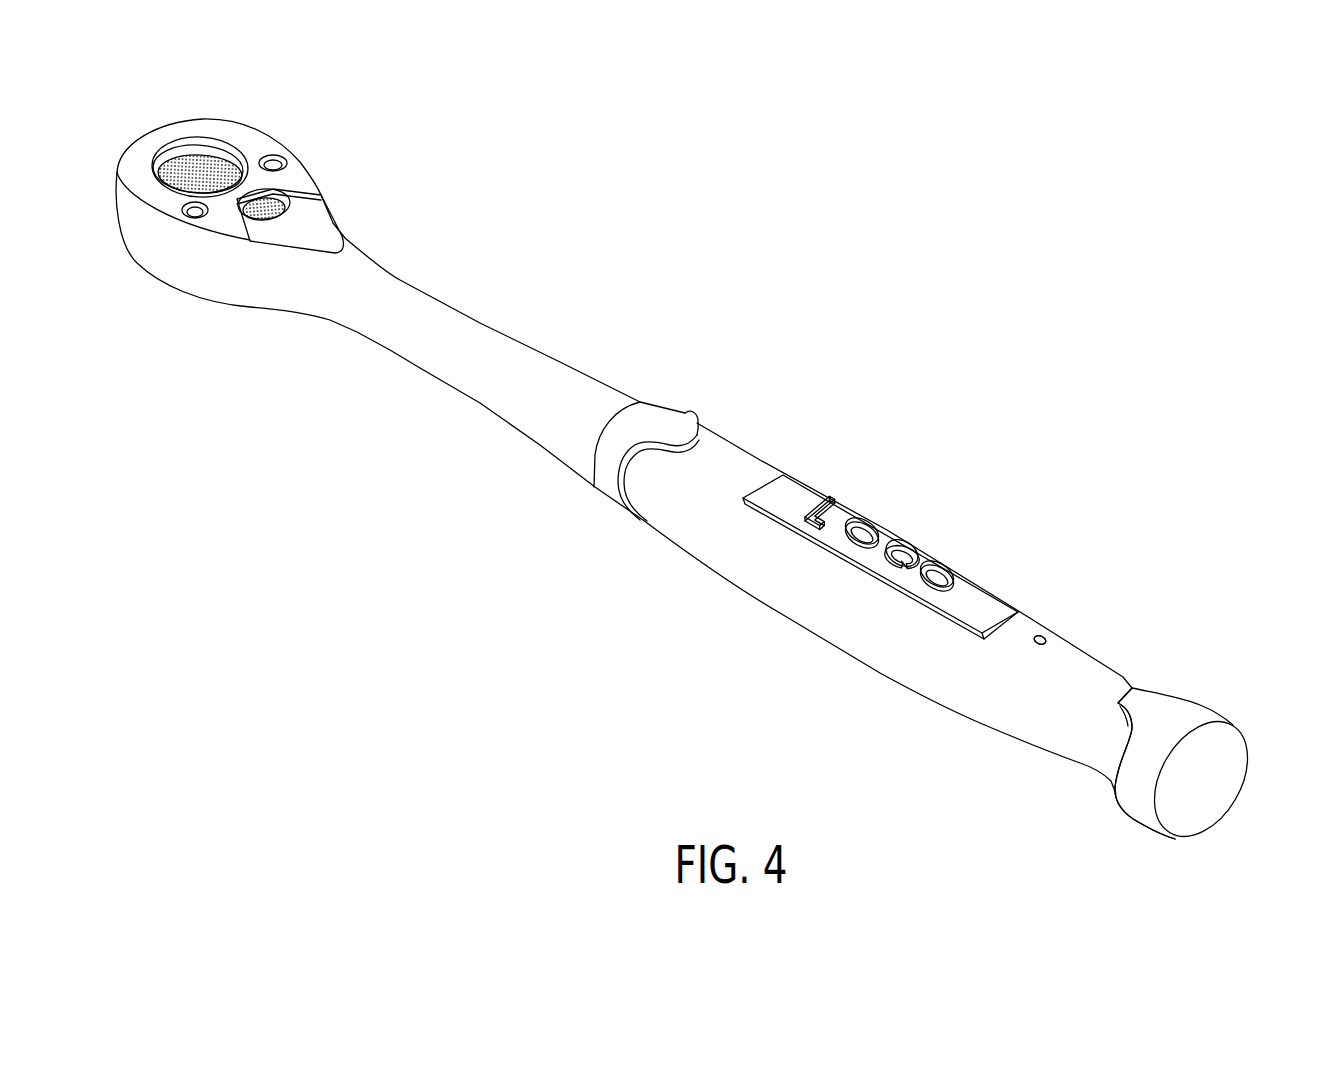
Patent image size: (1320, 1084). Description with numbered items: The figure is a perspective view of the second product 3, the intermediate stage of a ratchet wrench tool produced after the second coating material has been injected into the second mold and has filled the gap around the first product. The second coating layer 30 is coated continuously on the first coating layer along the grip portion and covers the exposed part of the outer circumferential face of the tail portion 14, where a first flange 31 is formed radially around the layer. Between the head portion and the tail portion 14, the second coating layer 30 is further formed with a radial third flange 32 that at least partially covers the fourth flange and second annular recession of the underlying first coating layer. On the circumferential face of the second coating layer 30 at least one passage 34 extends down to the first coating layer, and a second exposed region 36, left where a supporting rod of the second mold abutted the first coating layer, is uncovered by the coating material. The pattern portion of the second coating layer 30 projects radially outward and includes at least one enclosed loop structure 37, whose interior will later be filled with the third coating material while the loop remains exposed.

The second product 3 is at (778, 360).
The tail portion 14 is at (1222, 707).
The second coating layer 30 is at (1002, 582).
The first flange 31 is at (1132, 768).
The third flange 32 is at (658, 427).
The passage 34 is at (1040, 640).
The second exposed region 36 is at (1047, 641).
The enclosed loop structure 37 is at (870, 523).